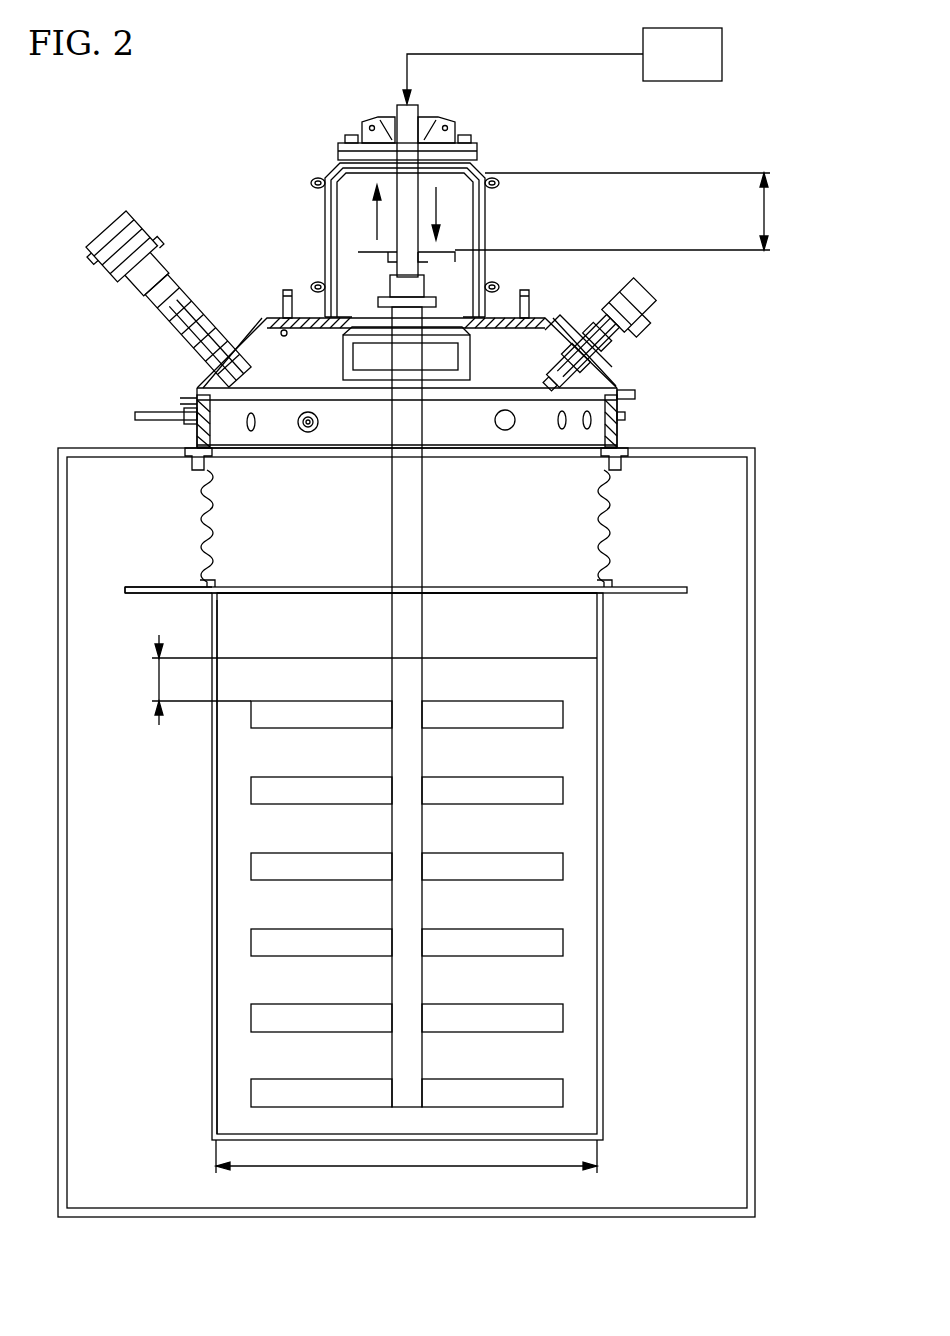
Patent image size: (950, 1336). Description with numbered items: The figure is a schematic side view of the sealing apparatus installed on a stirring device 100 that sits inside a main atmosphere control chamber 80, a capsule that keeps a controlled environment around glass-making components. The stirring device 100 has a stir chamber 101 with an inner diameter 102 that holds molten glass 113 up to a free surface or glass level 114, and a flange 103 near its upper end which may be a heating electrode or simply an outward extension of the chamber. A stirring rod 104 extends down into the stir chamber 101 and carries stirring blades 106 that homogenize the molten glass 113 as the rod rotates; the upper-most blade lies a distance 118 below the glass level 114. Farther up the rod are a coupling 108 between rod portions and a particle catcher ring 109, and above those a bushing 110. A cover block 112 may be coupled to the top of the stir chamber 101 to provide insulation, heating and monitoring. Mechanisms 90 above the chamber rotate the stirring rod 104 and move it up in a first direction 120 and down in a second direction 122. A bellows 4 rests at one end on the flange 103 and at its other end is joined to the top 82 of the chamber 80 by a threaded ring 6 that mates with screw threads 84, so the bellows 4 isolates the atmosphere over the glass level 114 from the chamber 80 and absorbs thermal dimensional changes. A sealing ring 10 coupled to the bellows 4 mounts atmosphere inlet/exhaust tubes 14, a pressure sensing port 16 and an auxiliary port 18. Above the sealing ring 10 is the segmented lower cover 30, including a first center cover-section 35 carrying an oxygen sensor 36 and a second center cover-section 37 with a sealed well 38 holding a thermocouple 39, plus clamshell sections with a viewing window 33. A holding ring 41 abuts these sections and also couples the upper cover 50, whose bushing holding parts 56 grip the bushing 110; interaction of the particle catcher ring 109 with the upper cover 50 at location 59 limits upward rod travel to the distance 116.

The bellows 4 is at (200, 540).
The threaded ring 6 is at (190, 470).
The sealing ring 10 is at (617, 445).
The atmosphere inlet/exhaust tubes 14 is at (150, 412).
The pressure sensing port 16 is at (308, 432).
The auxiliary port 18 is at (505, 430).
The lower cover 30 is at (559, 326).
The viewing window 33 is at (437, 380).
The first center cover-section 35 is at (250, 327).
The oxygen sensor 36 is at (110, 236).
The second center cover-section 37 is at (608, 378).
The well 38 is at (553, 380).
The thermocouple 39 is at (653, 303).
The holding ring 41 is at (325, 316).
The upper cover 50 is at (331, 160).
The bushing holding part 56 is at (447, 122).
The location 59 is at (480, 158).
The main atmosphere control chamber 80 is at (60, 667).
The top 82 is at (58, 448).
The screw threads 84 is at (185, 447).
The mechanisms 90 is at (672, 65).
The stirring device 100 is at (665, 587).
The stir chamber 101 is at (597, 880).
The inner diameter 102 is at (543, 1167).
The flange 103 is at (140, 598).
The stirring rod 104 is at (392, 555).
The stirring blades 106 is at (540, 715).
The coupling 108 is at (420, 287).
The particle catcher ring 109 is at (452, 255).
The bushing 110 is at (393, 104).
The cover block 112 is at (338, 594).
The molten glass 113 is at (243, 905).
The glass level 114 is at (575, 657).
The distance 116 is at (762, 215).
The distance 118 is at (158, 684).
The first direction 120 is at (337, 232).
The second direction 122 is at (520, 173).